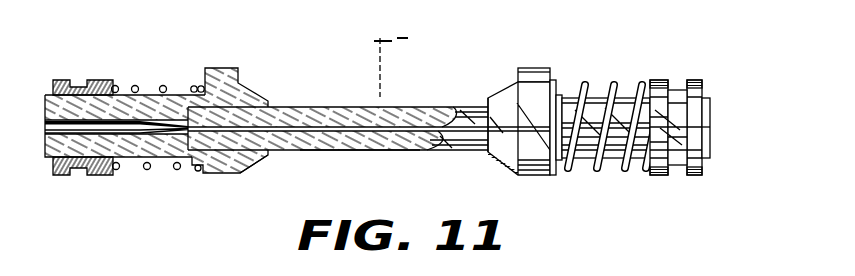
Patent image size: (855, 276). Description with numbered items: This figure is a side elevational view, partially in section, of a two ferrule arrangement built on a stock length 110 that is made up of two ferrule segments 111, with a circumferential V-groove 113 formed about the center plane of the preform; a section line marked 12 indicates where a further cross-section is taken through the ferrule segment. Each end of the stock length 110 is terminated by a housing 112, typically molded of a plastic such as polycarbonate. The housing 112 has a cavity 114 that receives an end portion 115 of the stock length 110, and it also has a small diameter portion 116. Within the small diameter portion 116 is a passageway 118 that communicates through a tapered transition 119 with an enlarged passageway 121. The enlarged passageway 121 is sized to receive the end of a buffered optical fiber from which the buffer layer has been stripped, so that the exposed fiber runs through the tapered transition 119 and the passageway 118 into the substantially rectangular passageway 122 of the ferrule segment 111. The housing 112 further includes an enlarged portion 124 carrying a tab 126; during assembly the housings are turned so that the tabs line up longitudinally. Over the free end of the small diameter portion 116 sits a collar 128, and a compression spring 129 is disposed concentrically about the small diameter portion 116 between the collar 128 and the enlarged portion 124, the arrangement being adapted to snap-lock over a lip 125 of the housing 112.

The stock length 110 is at (338, 139).
The ferrule segment 111 is at (384, 145).
The housing 112 is at (252, 100).
The circumferential V-groove 113 is at (377, 108).
The cavity 114 is at (278, 152).
The end portion 115 is at (237, 175).
The small diameter portion 116 is at (161, 172).
The passageway 118 is at (182, 153).
The tapered transition 119 is at (145, 122).
The enlarged passageway 121 is at (84, 120).
The substantially rectangular passageway 122 is at (407, 132).
The enlarged portion 124 is at (216, 144).
The lip 125 is at (199, 85).
The tab 126 is at (214, 72).
The collar 128 is at (68, 176).
The compression spring 129 is at (164, 86).
The section line for FIG. 12 is at (396, 67).